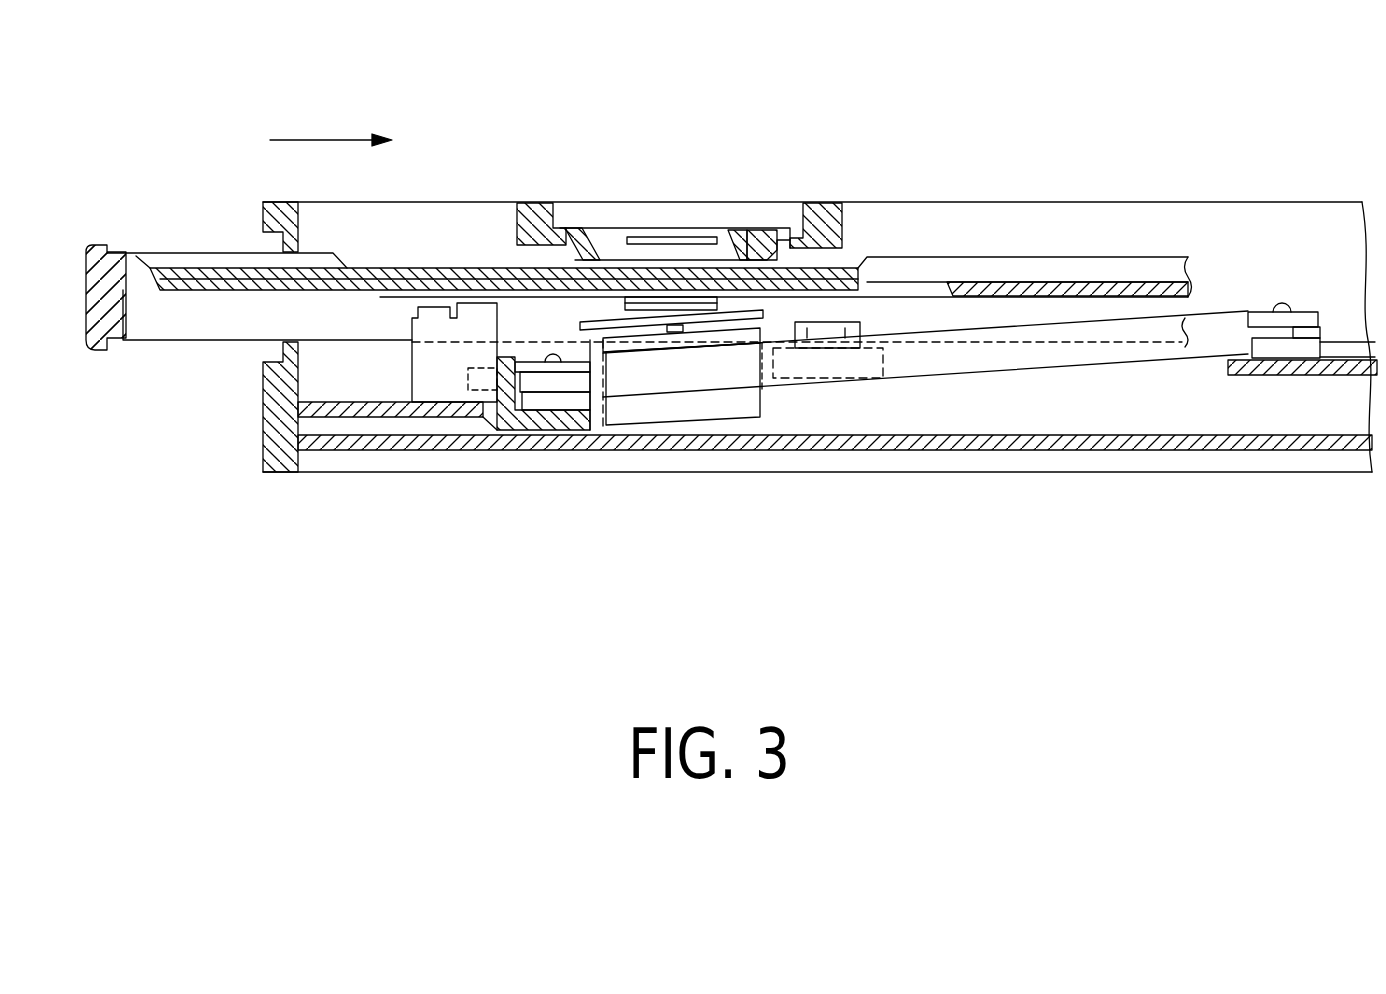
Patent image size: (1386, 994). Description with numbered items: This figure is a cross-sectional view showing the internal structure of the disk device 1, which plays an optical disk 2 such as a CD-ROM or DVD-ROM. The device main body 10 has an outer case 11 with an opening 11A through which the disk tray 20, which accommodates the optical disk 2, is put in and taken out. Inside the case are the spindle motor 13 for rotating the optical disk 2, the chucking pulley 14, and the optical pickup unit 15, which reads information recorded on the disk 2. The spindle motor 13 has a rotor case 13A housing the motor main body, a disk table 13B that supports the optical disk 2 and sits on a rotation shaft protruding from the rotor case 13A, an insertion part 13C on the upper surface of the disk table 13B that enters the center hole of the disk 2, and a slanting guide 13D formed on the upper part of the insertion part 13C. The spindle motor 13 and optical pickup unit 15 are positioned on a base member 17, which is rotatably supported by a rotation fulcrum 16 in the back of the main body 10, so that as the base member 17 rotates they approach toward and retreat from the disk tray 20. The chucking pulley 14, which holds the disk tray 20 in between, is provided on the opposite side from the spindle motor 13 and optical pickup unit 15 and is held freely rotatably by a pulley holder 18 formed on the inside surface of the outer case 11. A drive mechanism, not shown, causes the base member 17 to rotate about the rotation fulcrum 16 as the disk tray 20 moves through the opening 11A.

The disk device 1 is at (1176, 150).
The optical disk 2 is at (195, 262).
The main body 10 is at (960, 203).
The outer case 11 is at (402, 202).
The opening 11A is at (250, 354).
The spindle motor 13 is at (693, 405).
The rotor case 13A is at (745, 420).
The disk table 13B is at (600, 312).
The insertion part 13C is at (690, 297).
The slanting guide 13D is at (603, 318).
The chucking pulley 14 is at (757, 227).
The optical pickup unit 15 is at (827, 380).
The rotation fulcrum 16 is at (1290, 352).
The base member 17 is at (1037, 352).
The pulley holder 18 is at (843, 227).
The disk tray 20 is at (120, 260).